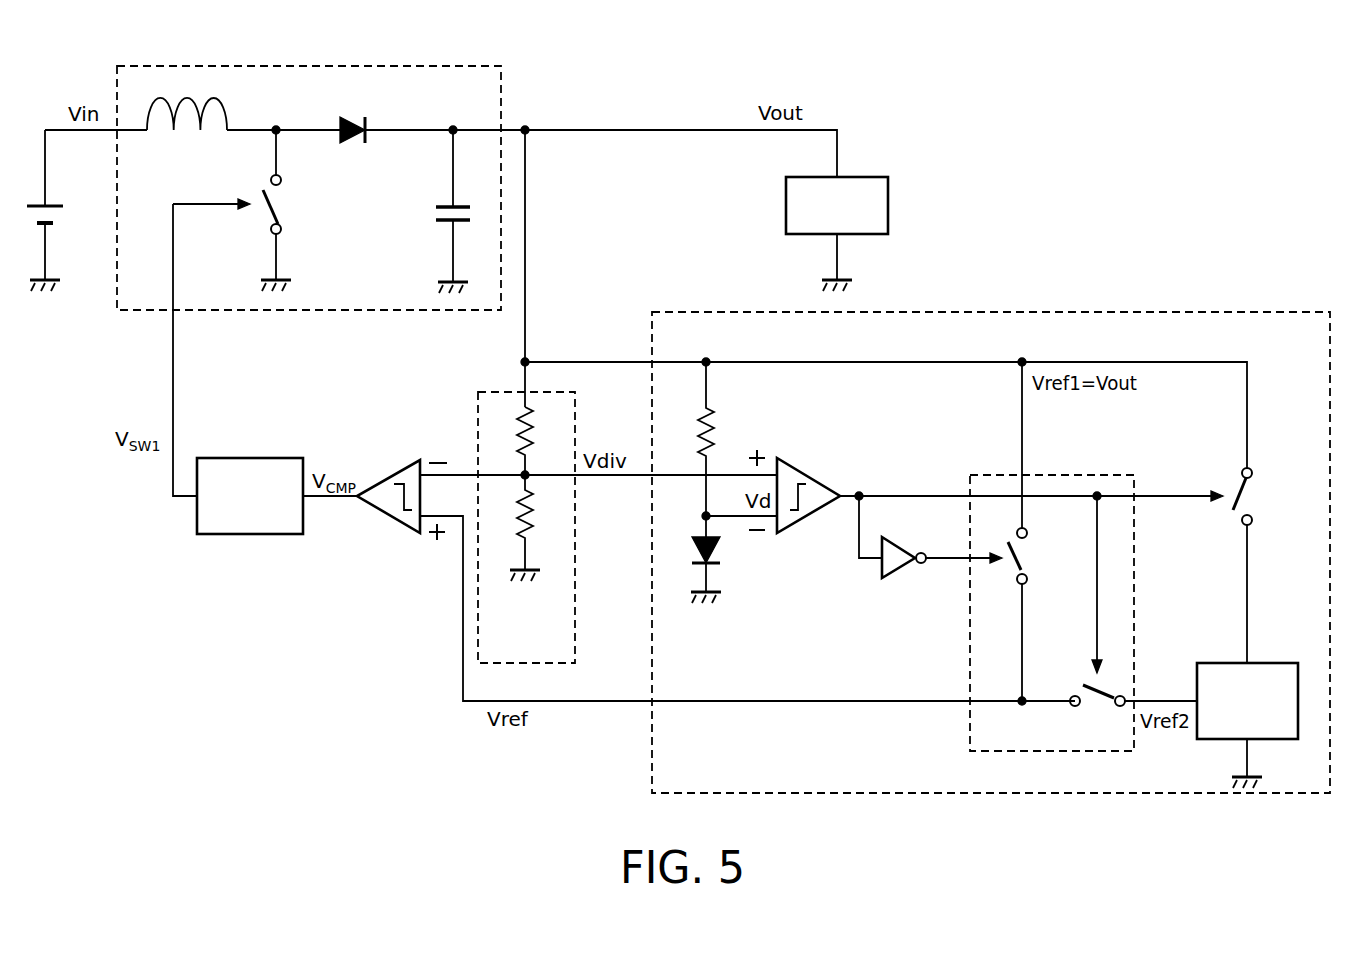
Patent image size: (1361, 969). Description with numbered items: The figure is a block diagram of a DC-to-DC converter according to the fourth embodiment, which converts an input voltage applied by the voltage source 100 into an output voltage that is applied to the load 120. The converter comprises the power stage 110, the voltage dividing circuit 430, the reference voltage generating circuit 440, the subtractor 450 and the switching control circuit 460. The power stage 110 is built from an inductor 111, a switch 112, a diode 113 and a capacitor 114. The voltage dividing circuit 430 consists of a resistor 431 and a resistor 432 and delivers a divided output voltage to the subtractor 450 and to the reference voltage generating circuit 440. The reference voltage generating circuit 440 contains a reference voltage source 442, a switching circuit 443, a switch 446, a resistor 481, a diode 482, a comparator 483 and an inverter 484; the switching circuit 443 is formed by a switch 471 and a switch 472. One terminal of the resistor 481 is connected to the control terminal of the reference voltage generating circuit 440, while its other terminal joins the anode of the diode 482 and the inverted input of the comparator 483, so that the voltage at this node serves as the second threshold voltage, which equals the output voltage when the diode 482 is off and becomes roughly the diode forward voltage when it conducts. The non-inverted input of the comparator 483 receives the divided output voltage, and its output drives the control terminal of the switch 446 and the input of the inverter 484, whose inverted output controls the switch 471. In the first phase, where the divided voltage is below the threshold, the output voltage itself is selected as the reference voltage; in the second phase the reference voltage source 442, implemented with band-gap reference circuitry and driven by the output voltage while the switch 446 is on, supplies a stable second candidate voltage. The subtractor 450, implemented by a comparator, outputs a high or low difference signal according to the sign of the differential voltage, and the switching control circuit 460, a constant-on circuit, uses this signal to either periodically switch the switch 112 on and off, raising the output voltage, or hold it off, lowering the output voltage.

The voltage source 100 is at (33, 197).
The power stage 110 is at (450, 62).
The inductor 111 is at (229, 115).
The switch 112 is at (258, 212).
The diode 113 is at (353, 146).
The capacitor 114 is at (445, 200).
The load 120 is at (863, 175).
The voltage dividing circuit 430 is at (575, 650).
The resistor 431 is at (537, 515).
The resistor 432 is at (537, 437).
The reference voltage generating circuit 440 is at (675, 310).
The reference voltage source 442 is at (1217, 658).
The switching circuit 443 is at (1103, 470).
The switch 446 is at (1234, 485).
The subtractor 450 is at (393, 470).
The switching control circuit 460 is at (275, 455).
The switch 471 is at (1005, 572).
The switch 472 is at (1082, 680).
The resistor 481 is at (715, 420).
The diode 482 is at (693, 535).
The comparator 483 is at (815, 472).
The inverter 484 is at (900, 580).